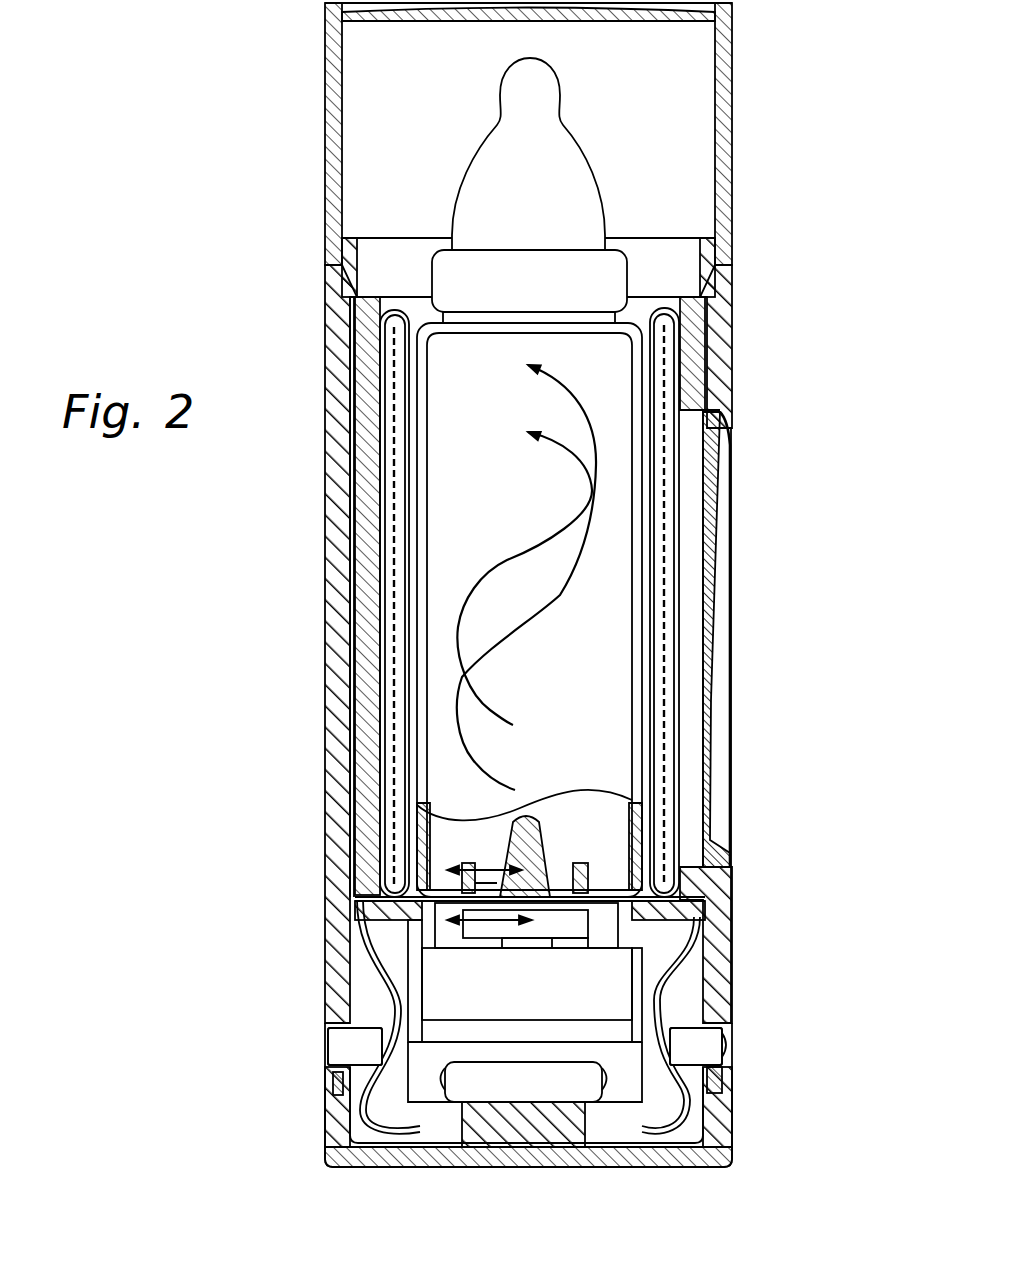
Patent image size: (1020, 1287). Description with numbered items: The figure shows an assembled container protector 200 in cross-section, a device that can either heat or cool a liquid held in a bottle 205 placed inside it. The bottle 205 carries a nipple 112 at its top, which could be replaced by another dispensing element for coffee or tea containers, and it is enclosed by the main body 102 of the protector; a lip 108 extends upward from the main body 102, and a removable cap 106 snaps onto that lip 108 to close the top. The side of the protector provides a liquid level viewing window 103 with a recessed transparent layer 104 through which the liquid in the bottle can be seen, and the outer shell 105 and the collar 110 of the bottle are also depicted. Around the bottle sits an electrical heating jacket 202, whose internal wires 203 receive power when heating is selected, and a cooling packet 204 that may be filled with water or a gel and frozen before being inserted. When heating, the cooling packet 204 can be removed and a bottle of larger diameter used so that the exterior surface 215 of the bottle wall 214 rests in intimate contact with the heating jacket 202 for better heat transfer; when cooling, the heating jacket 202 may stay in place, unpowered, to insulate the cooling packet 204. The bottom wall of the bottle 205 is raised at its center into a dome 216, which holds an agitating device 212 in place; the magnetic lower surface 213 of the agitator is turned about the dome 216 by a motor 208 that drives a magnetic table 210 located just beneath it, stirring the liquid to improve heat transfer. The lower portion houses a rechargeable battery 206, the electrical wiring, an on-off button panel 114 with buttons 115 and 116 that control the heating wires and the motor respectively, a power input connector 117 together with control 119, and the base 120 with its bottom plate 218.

The assembly 200 is at (212, 62).
The main body 102 is at (349, 409).
The liquid level viewing window 103 is at (698, 632).
The recessed transparent layer 104 is at (712, 508).
The outer shell 105 is at (729, 686).
The removable cap 106 is at (326, 146).
The lip 108 is at (348, 256).
The bottle collar 110 is at (526, 270).
The nipple 112 is at (490, 153).
The on-off button panel 114 is at (730, 1033).
The on-off button 115 is at (729, 1042).
The on-off button 116 is at (696, 1046).
The electrical connection 117 is at (329, 1042).
The control button 119 is at (355, 1046).
The base 120 is at (326, 1123).
The electrical heating jacket 202 is at (356, 660).
The wires 203 is at (356, 718).
The cooling packet 204 is at (397, 337).
The bottle 205 is at (629, 647).
The rechargeable battery 206 is at (523, 1080).
The motor 208 is at (433, 982).
The magnetic table 210 is at (483, 928).
The agitating device 212 is at (582, 860).
The lower surface 213 is at (577, 900).
The bottle wall 214 is at (417, 470).
The exterior surface 215 is at (408, 515).
The dome 216 is at (507, 842).
The bottom plate 218 is at (326, 1163).